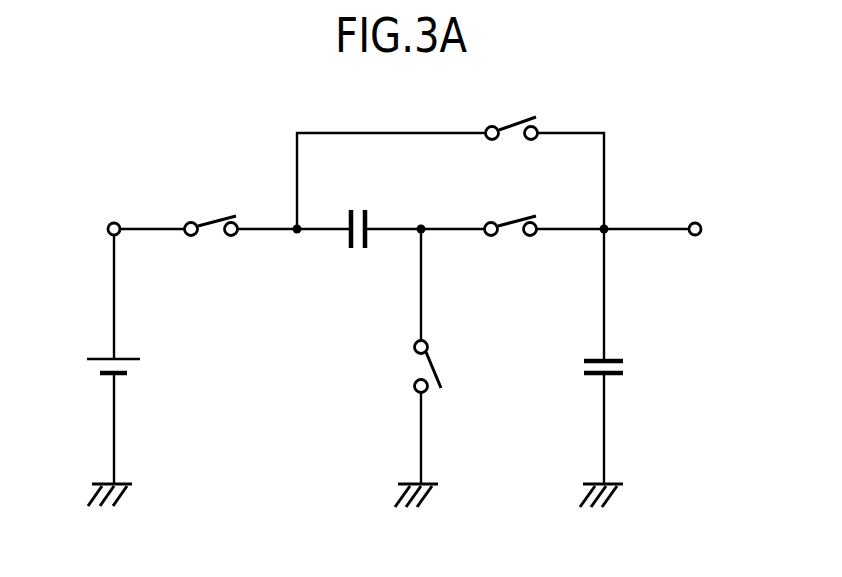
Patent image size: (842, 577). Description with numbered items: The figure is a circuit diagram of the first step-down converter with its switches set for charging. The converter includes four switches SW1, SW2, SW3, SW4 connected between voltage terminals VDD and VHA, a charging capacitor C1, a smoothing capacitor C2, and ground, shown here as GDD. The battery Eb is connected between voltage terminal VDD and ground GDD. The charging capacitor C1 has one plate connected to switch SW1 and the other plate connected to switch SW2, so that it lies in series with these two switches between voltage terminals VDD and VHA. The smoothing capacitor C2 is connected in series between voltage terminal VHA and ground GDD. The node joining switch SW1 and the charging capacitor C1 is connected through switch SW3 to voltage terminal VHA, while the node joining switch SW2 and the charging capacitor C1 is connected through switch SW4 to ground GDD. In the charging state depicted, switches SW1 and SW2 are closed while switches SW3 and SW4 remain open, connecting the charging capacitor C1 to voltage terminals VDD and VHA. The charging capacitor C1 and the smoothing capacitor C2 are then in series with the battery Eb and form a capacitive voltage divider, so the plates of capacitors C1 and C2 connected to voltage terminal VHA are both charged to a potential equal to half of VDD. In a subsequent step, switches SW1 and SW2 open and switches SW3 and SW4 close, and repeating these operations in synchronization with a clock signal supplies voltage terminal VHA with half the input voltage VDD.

The voltage terminal VDD is at (85, 229).
The voltage terminal VHA is at (724, 229).
The switch SW1 is at (211, 210).
The switch SW2 is at (512, 211).
The switch SW3 is at (512, 113).
The switch SW4 is at (397, 356).
The charging capacitor C1 is at (358, 214).
The smoothing capacitor C2 is at (623, 356).
The battery Eb is at (95, 359).
The ground GDD is at (352, 513).